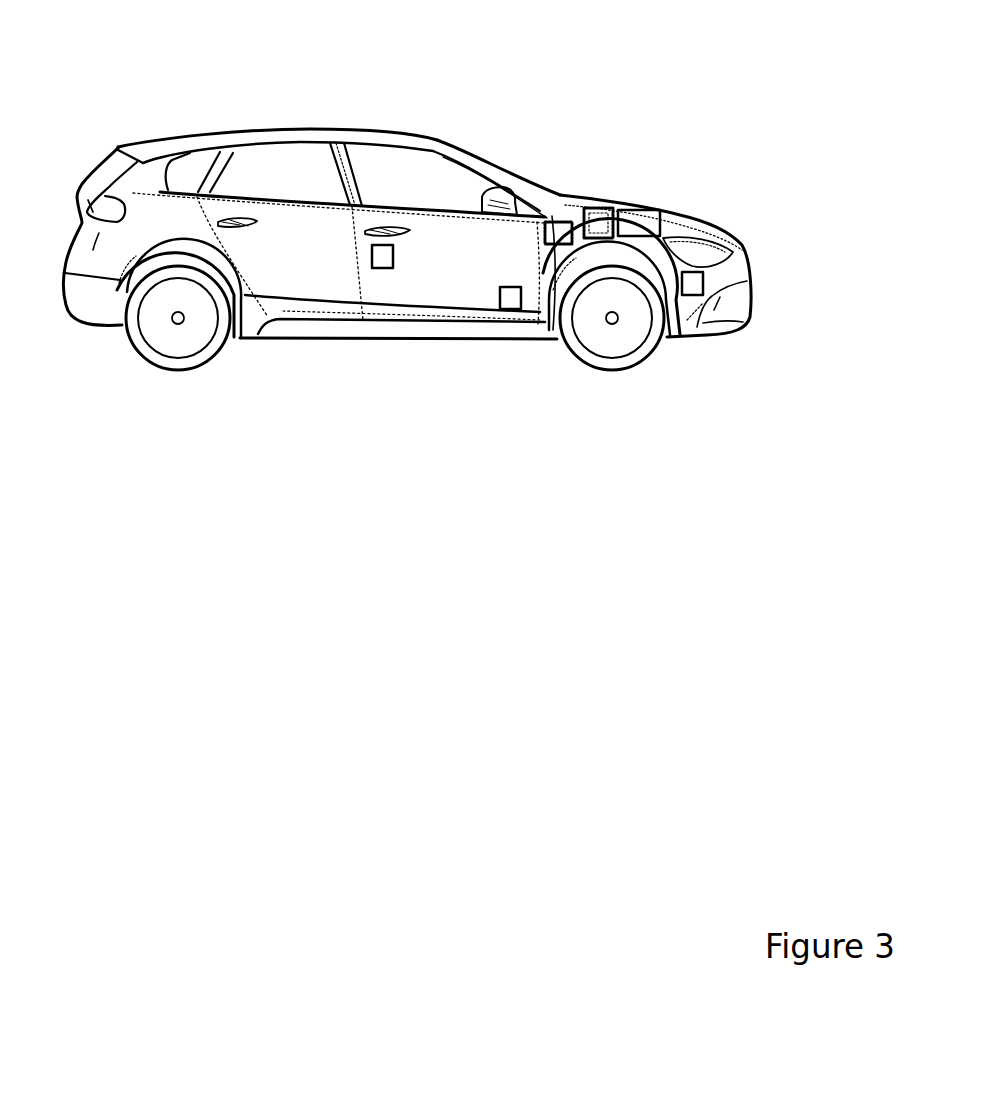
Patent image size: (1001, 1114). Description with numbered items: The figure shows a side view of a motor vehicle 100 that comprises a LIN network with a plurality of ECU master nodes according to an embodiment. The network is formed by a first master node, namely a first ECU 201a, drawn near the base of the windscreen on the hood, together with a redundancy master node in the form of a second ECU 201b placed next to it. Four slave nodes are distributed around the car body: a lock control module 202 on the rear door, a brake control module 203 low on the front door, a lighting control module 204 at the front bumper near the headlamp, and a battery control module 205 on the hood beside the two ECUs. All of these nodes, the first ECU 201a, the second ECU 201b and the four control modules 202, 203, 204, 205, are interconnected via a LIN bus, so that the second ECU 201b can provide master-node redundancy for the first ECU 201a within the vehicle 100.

The vehicle 100 is at (421, 140).
The first ECU 201a is at (591, 206).
The second ECU 201b is at (554, 221).
The lock control module 202 is at (386, 269).
The brake control module 203 is at (512, 309).
The lighting control module 204 is at (703, 283).
The battery control module 205 is at (642, 214).